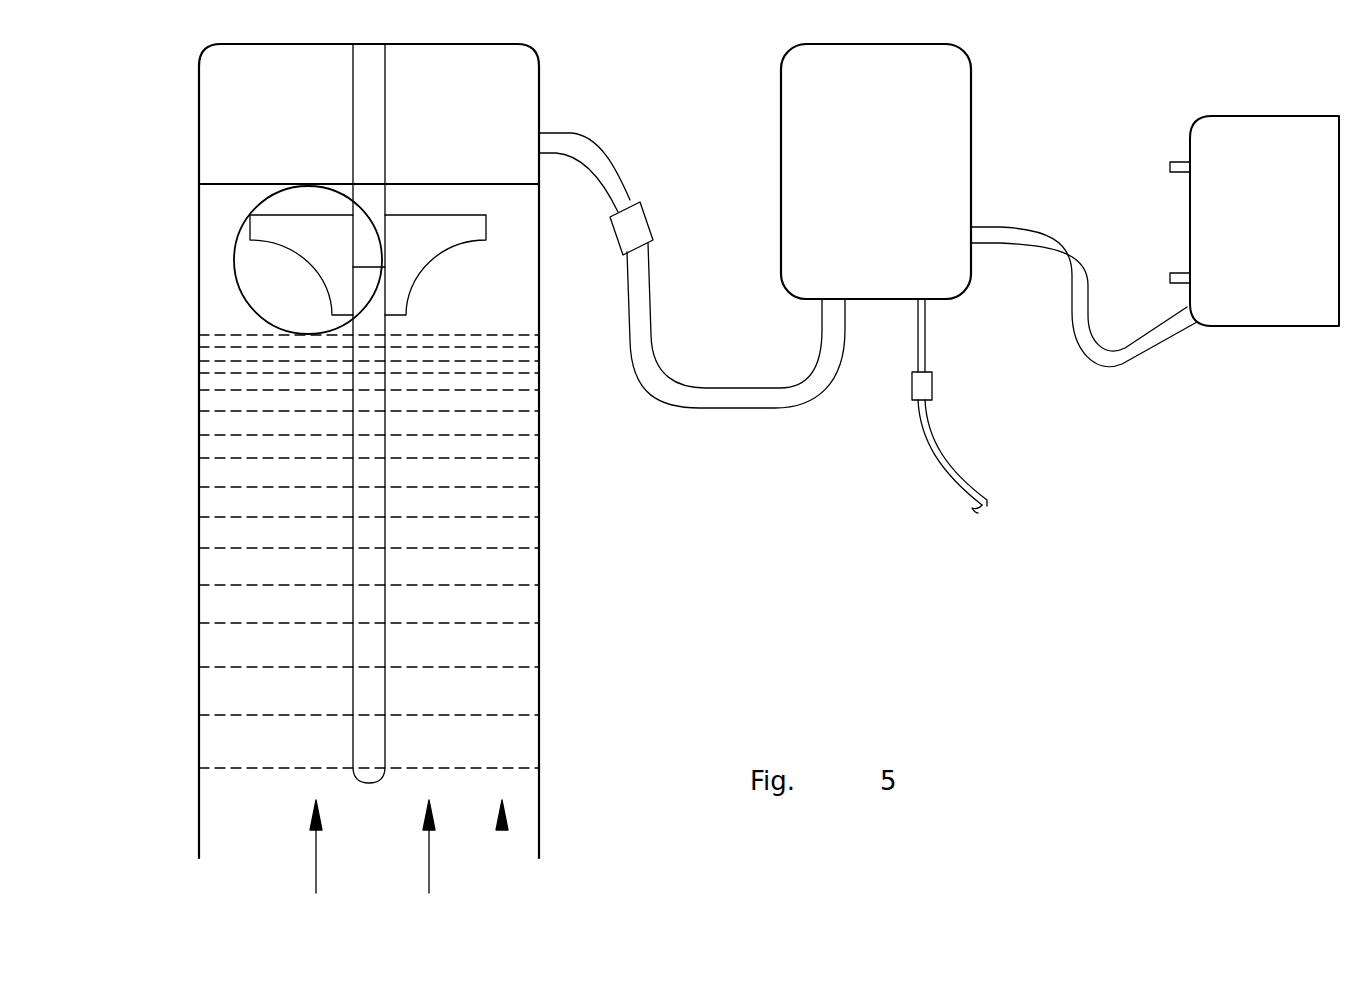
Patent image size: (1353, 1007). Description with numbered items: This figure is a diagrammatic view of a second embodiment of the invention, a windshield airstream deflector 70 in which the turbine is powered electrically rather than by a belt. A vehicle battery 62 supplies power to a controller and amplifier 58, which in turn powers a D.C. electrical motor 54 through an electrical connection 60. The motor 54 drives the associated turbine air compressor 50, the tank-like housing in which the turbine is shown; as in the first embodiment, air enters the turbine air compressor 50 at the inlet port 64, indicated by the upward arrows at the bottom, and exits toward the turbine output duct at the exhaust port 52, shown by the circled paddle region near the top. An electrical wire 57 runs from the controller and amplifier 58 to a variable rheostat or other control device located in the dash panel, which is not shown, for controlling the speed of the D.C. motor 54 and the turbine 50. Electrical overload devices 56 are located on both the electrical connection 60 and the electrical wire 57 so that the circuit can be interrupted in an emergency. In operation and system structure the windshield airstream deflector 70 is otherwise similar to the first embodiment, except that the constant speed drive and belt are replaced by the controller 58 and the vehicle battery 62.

The turbine air compressor 50 is at (570, 92).
The exhaust port 52 is at (284, 183).
The D.C. electrical motor 54 is at (449, 152).
The electrical overload devices 56 is at (613, 237).
The electrical wire 57 is at (927, 333).
The controller and amplifier 58 is at (879, 182).
The electrical connection 60 is at (727, 388).
The vehicle battery 62 is at (1247, 295).
The inlet port 64 is at (502, 828).
The windshield airstream deflector 70 is at (580, 603).